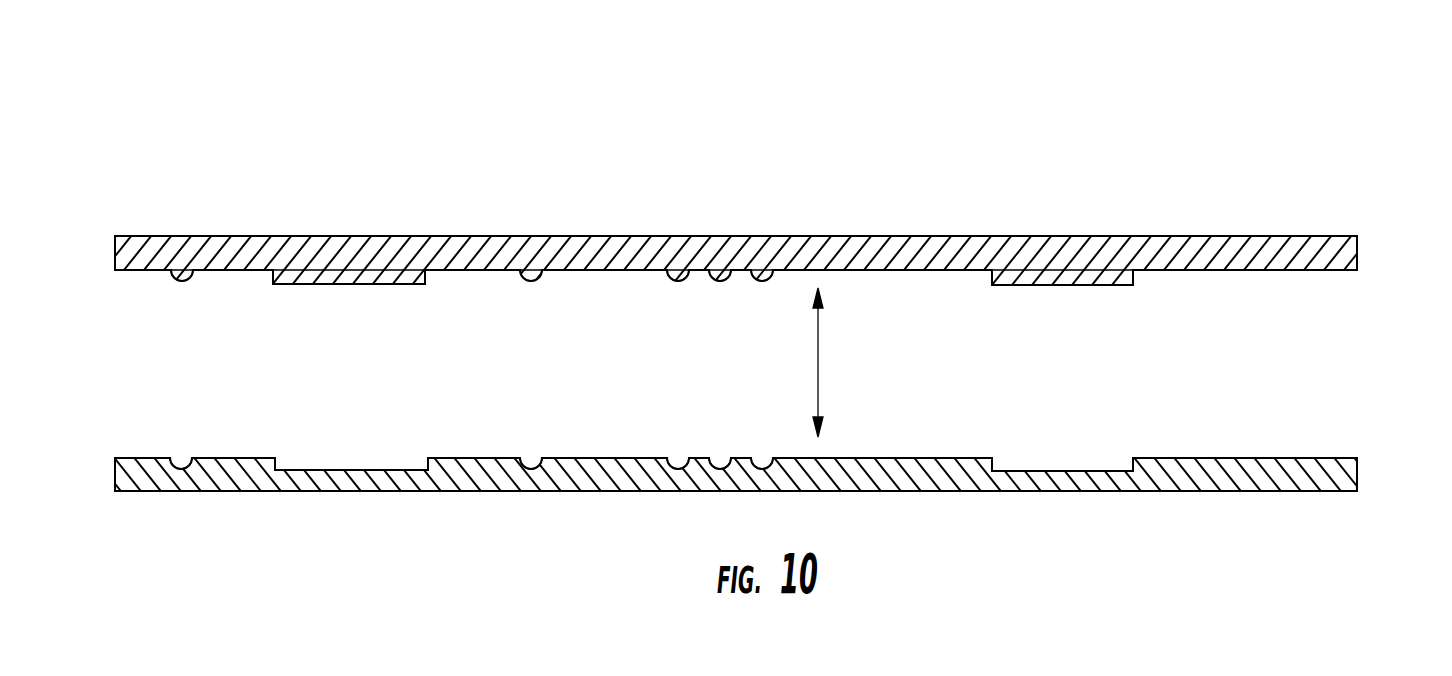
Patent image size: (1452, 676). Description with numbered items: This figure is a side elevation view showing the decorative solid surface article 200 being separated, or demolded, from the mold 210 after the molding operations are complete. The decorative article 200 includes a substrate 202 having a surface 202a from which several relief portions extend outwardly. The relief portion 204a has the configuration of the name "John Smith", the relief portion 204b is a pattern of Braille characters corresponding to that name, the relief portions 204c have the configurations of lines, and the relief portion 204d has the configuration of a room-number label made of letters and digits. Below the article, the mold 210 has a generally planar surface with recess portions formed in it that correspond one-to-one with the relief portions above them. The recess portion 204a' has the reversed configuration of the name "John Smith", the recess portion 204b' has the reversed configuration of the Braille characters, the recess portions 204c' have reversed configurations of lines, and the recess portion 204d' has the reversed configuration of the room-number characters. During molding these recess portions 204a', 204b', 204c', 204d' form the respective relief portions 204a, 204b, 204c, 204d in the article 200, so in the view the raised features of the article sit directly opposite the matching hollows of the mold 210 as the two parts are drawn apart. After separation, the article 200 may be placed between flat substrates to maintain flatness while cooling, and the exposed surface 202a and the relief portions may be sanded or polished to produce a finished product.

The decorative solid surface article 200 is at (1279, 150).
The substrate 202 is at (1334, 238).
The surface 202a is at (1335, 272).
The relief portion 204a is at (333, 307).
The relief portion 204b is at (669, 311).
The relief portions 204c is at (311, 307).
The relief portion 204d is at (1040, 310).
The recess portion 204a' is at (342, 421).
The recess portion 204b' is at (709, 421).
The recess portions 204c' is at (319, 421).
The recess portion 204d' is at (1062, 425).
The mold 210 is at (1317, 492).